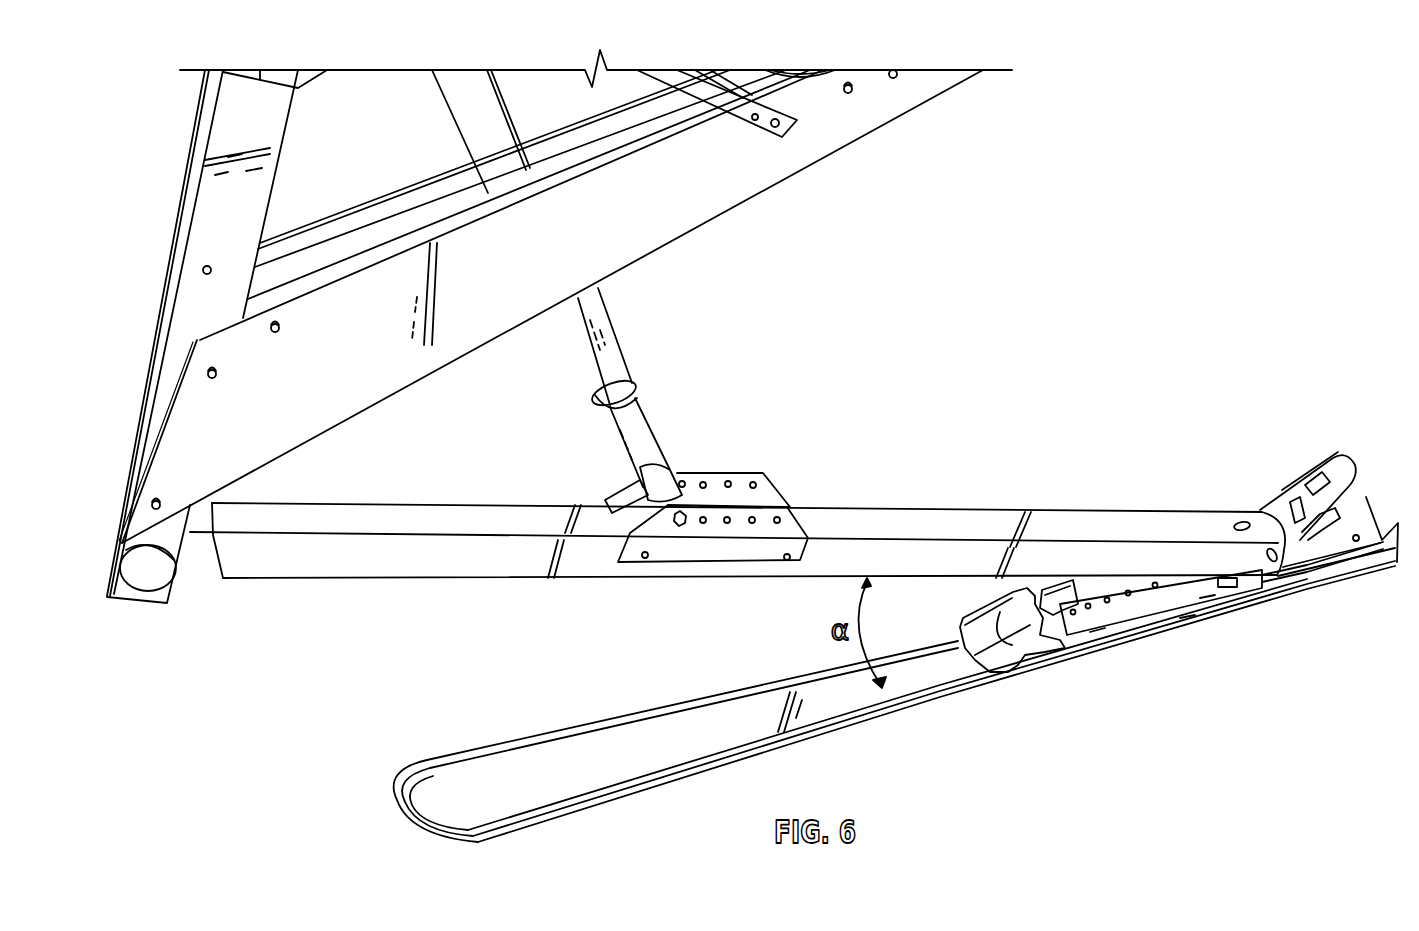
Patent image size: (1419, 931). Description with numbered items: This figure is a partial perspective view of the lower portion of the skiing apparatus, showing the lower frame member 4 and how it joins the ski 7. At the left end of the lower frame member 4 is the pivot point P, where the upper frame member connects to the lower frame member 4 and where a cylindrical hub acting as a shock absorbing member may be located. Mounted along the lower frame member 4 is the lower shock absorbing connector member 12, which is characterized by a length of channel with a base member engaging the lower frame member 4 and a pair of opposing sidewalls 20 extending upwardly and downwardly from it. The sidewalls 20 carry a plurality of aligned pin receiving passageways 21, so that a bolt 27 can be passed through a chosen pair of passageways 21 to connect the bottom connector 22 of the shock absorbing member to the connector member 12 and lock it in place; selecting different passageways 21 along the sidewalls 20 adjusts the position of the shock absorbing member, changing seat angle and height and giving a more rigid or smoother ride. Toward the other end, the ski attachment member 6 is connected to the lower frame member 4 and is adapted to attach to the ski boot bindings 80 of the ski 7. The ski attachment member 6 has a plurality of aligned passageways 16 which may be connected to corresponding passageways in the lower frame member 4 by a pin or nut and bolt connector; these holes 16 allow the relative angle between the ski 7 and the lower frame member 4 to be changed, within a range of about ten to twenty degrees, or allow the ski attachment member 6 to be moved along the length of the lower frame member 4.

The lower frame member 4 is at (1100, 527).
The ski attachment member 6 is at (1152, 600).
The ski 7 is at (658, 728).
The lower shock absorbing connector member 12 is at (607, 513).
The aligned passageways 16 is at (1107, 603).
The opposing sidewalls 20 is at (753, 475).
The pin receiving passageways 21 is at (767, 485).
The bottom connector 22 is at (692, 495).
The bolt 27 is at (680, 528).
The ski boot bindings 80 is at (1007, 647).
The pivot point P is at (148, 580).